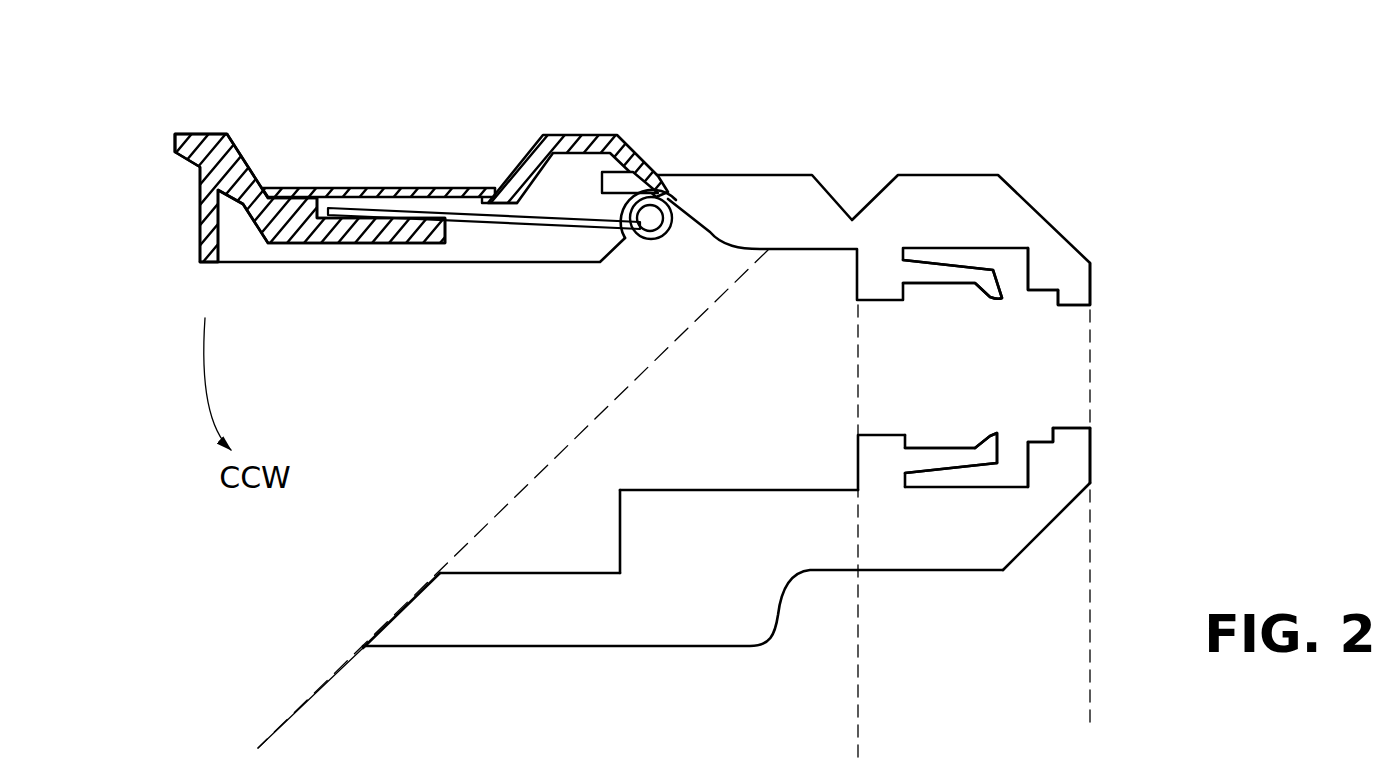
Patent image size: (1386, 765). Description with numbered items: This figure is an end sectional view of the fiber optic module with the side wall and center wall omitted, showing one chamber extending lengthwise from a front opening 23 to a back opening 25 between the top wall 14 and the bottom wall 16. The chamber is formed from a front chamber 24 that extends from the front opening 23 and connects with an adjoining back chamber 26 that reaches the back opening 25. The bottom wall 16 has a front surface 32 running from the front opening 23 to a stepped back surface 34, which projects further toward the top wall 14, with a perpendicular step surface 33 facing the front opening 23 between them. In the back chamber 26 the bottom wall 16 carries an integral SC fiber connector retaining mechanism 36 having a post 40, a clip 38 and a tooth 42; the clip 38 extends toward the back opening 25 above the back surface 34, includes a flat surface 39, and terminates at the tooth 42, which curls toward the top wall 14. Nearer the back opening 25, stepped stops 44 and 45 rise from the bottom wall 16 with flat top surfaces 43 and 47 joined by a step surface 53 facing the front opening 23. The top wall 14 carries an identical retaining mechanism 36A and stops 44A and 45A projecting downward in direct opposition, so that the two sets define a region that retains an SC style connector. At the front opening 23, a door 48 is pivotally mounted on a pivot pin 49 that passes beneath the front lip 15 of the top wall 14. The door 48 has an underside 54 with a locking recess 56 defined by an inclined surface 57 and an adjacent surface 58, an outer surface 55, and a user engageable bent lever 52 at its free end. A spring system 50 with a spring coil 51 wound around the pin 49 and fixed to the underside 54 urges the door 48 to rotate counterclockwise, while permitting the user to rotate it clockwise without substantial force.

The top wall 14 is at (898, 173).
The front lip 15 is at (626, 184).
The bottom wall 16 is at (651, 628).
The front opening 23 is at (543, 444).
The front chamber 24 is at (258, 748).
The back opening 25 is at (1160, 362).
The back chamber 26 is at (862, 677).
The front surface 32 is at (517, 572).
The step surface 33 is at (621, 488).
The back surface 34 is at (700, 489).
The SC fiber connector retaining mechanism 36 is at (930, 500).
The retaining mechanism 36A is at (931, 294).
The clip 38 is at (917, 453).
The flat surface 39 is at (962, 446).
The post 40 is at (856, 463).
The tooth 42 is at (999, 444).
The top surface 43 is at (1036, 442).
The stop 44 is at (1090, 482).
The stop 44A is at (1047, 288).
The stop 45 is at (1092, 436).
The stop 45A is at (1075, 303).
The top surface 47 is at (1077, 430).
The door 48 is at (296, 172).
The pivot pin 49 is at (658, 200).
The spring system 50 is at (545, 240).
The spring coil 51 is at (668, 229).
The bent lever 52 is at (182, 137).
The step surface 53 is at (1053, 428).
The underside 54 is at (288, 246).
The outer surface 55 is at (440, 188).
The locking recess 56 is at (572, 185).
The inclined surface 57 is at (550, 163).
The surface 58 is at (587, 150).